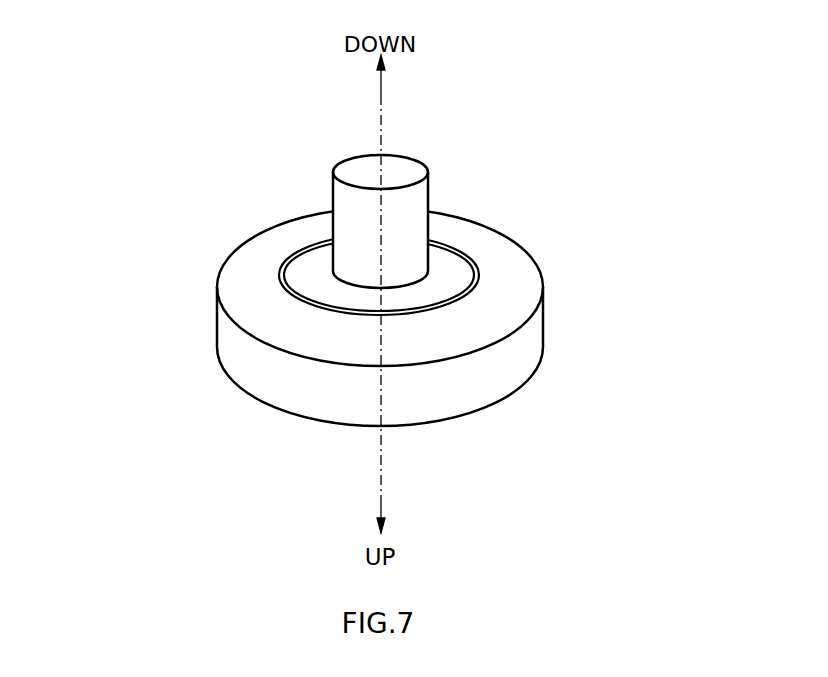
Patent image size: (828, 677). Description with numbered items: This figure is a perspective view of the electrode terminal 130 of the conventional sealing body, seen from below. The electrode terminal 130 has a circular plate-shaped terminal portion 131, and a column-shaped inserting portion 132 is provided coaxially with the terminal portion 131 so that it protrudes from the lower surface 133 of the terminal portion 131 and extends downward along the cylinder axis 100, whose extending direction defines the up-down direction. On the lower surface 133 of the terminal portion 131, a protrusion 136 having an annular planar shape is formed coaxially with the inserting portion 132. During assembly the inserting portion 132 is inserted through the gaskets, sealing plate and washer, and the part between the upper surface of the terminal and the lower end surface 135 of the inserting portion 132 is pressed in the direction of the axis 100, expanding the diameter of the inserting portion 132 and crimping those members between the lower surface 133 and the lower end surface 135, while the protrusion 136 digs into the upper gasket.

The cylinder axis 100 is at (383, 131).
The electrode terminal 130 is at (390, 260).
The terminal portion 131 is at (507, 363).
The inserting portion 132 is at (465, 191).
The lower surface 133 is at (244, 298).
The lower end surface 135 is at (354, 165).
The protrusion 136 is at (473, 256).